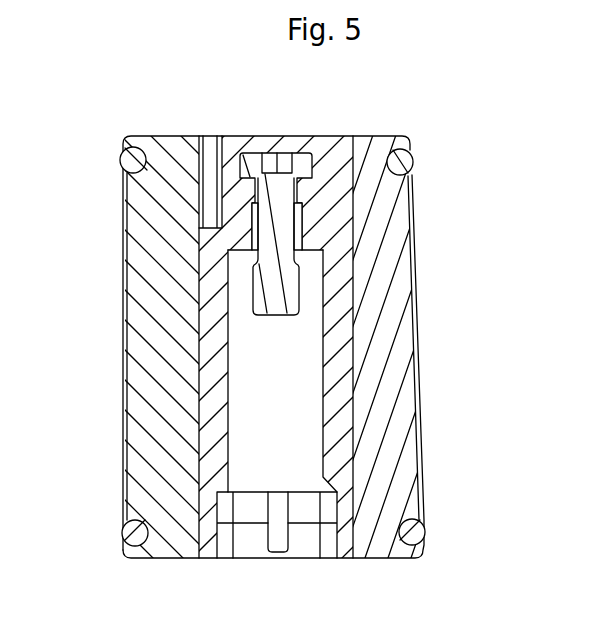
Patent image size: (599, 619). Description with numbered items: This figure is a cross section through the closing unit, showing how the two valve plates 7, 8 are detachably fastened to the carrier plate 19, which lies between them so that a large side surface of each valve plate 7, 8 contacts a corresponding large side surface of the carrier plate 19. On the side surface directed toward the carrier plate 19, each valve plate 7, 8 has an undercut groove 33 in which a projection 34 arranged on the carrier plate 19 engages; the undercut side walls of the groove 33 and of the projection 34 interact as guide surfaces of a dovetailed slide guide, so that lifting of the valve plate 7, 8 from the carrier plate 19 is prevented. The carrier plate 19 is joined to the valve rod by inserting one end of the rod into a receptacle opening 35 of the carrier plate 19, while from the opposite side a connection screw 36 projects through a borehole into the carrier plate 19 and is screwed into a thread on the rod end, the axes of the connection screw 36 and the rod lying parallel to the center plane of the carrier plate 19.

The valve plate 7 is at (167, 342).
The valve plate 8 is at (388, 365).
The carrier plate 19 is at (336, 280).
The undercut groove 33 is at (210, 148).
The projection 34 is at (215, 285).
The receptacle opening 35 is at (302, 433).
The connection screw 36 is at (275, 229).